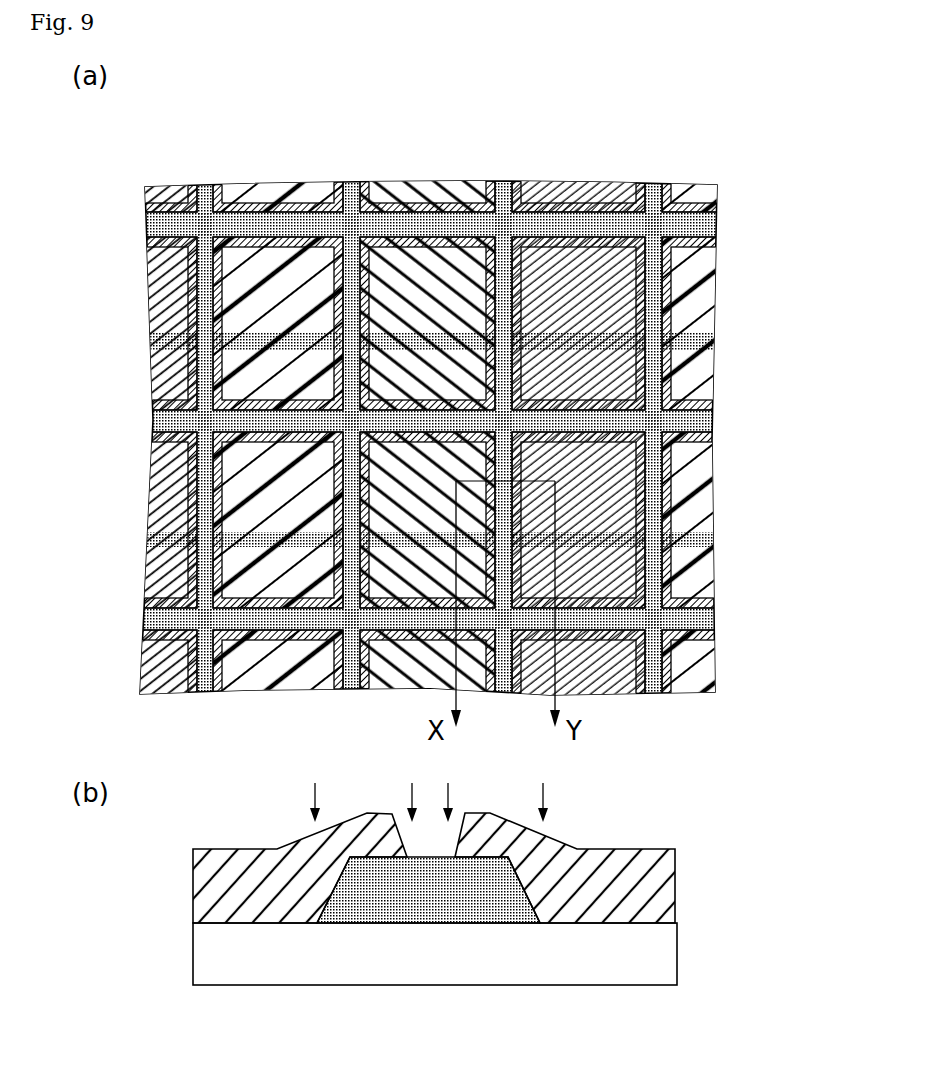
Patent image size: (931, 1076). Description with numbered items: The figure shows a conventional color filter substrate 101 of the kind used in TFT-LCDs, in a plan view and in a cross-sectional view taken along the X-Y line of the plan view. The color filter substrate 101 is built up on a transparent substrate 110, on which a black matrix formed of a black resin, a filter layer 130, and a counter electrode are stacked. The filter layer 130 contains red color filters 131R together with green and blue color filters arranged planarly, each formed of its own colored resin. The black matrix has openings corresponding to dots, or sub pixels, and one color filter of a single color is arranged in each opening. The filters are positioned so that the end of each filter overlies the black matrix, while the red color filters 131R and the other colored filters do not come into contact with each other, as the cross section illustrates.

The color filter substrate 101 is at (681, 169).
The filter layer 130 is at (430, 386).
The red color filter 131R is at (276, 258).
The transparent substrate 110 is at (663, 958).